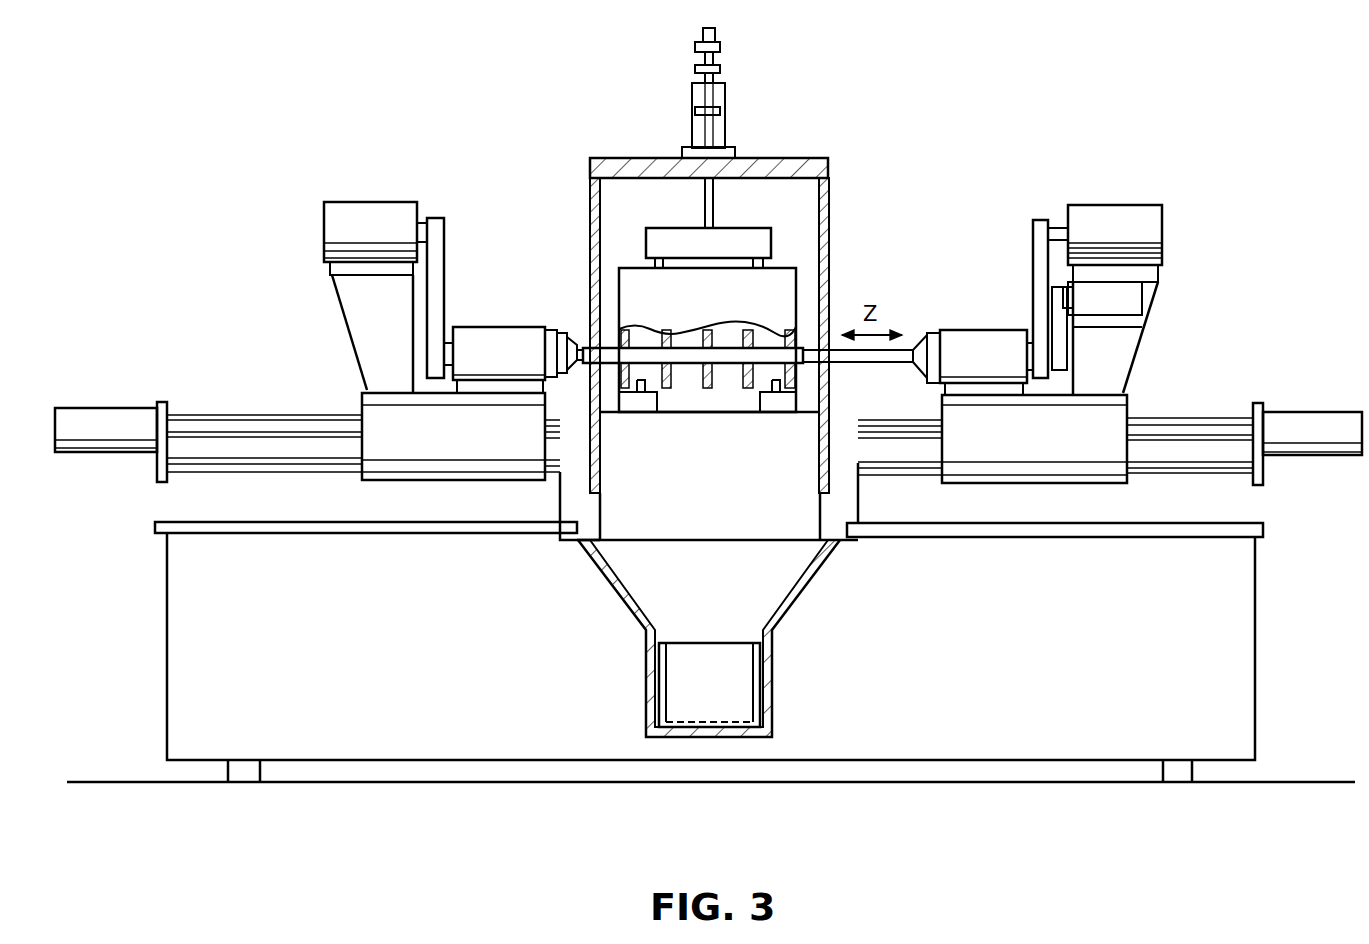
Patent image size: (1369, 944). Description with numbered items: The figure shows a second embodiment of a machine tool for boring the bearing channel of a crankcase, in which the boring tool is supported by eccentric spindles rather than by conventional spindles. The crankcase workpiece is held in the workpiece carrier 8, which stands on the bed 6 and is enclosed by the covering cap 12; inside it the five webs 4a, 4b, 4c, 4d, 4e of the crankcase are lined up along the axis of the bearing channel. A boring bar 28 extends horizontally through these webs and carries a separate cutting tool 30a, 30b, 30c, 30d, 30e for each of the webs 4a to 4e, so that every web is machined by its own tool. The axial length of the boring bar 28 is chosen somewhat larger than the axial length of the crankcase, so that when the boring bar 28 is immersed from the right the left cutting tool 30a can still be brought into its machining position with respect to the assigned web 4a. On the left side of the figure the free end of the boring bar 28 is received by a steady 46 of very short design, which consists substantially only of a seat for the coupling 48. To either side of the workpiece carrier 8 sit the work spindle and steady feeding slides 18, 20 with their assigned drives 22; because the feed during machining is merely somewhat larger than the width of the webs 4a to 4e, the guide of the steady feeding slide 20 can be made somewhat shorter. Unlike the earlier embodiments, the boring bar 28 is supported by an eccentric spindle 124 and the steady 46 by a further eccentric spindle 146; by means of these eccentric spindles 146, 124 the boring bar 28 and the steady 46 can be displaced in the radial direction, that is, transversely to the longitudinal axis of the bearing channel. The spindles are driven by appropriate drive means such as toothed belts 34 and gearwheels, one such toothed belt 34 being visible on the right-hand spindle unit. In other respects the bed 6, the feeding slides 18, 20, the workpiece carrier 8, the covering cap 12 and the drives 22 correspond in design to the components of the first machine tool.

The web 4a is at (632, 326).
The web 4b is at (667, 328).
The web 4c is at (708, 325).
The web 4d is at (748, 324).
The web 4e is at (790, 326).
The bed 6 is at (457, 672).
The workpiece carrier 8 is at (731, 525).
The covering cap 12 is at (653, 162).
The work spindle feeding slide 18 is at (1040, 450).
The steady feeding slide 20 is at (428, 450).
The drive 22 is at (92, 423).
The boring bar 28 is at (833, 352).
The cutting tool 30a is at (615, 370).
The cutting tool 30b is at (650, 365).
The cutting tool 30c is at (692, 365).
The cutting tool 30d is at (730, 365).
The cutting tool 30e is at (782, 370).
The toothed belt 34 is at (1040, 258).
The steady 46 is at (558, 373).
The coupling 48 is at (578, 347).
The eccentric spindle 124 is at (980, 345).
The eccentric spindle 146 is at (368, 217).